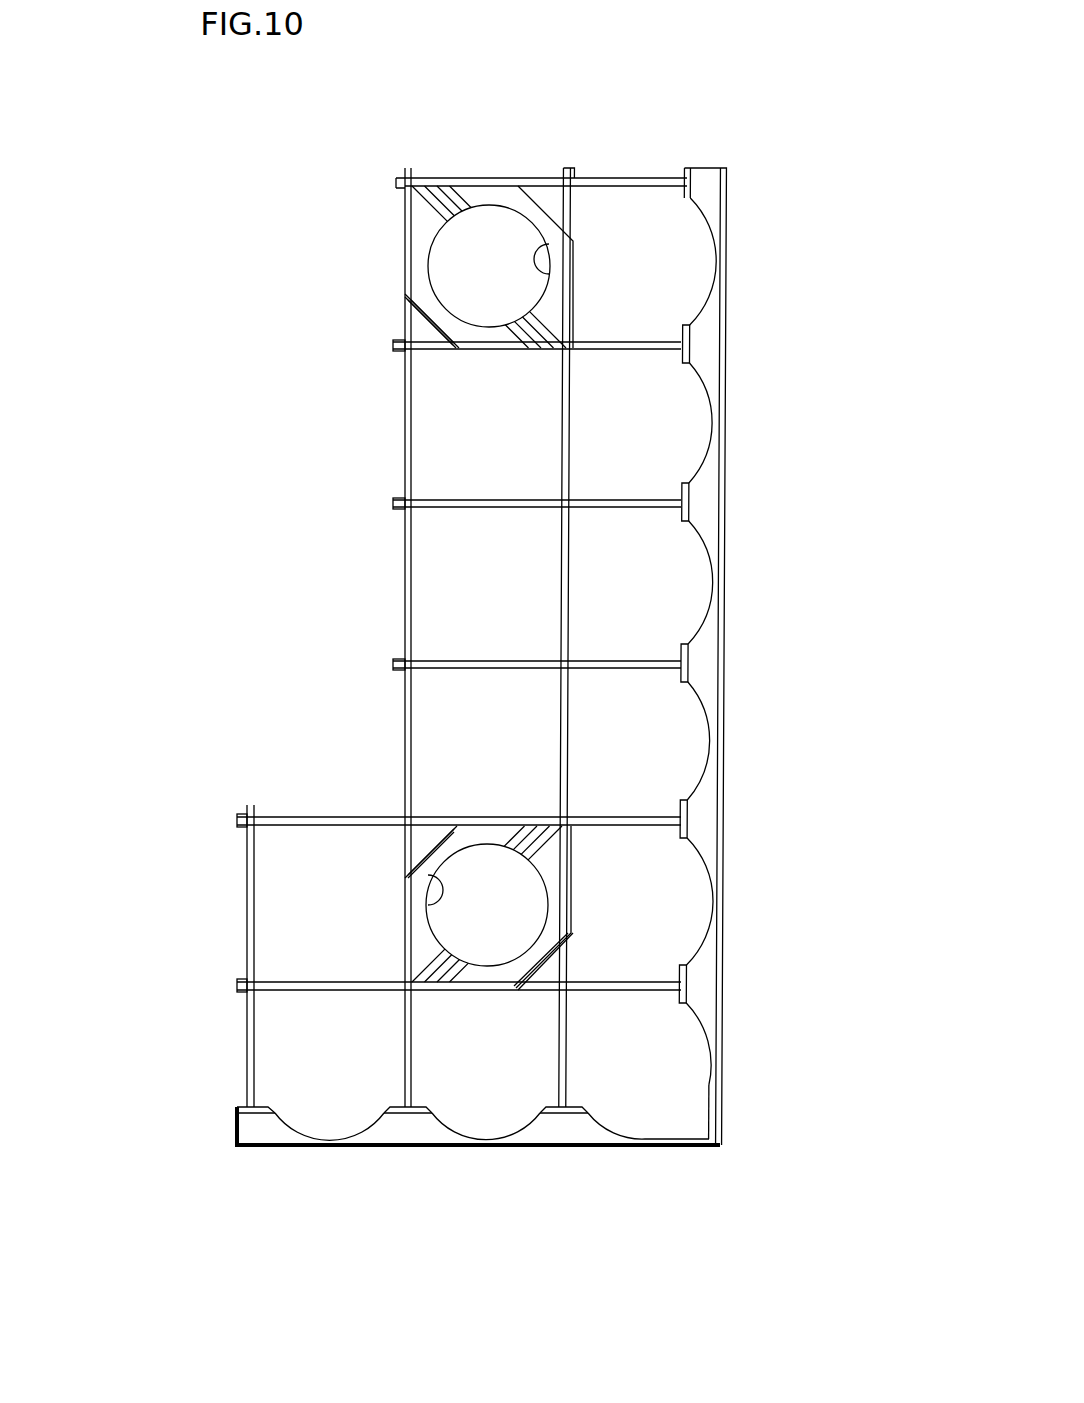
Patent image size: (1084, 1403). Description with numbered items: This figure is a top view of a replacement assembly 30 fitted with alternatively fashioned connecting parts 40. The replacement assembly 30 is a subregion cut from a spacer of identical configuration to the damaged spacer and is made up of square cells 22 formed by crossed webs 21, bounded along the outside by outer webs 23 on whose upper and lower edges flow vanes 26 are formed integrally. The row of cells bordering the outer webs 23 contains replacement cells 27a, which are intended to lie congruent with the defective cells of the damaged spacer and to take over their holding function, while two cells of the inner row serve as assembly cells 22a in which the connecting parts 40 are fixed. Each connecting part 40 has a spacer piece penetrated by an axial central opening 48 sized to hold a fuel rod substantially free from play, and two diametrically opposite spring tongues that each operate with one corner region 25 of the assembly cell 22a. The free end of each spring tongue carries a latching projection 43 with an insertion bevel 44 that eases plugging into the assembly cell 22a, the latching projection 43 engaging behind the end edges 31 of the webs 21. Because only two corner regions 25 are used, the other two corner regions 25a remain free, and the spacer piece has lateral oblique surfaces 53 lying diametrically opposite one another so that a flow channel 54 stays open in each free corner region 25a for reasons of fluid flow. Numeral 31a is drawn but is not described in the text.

The webs 21 is at (477, 657).
The cells 22 is at (470, 560).
The assembly cell 22a is at (420, 322).
The outer webs 23 is at (720, 495).
The corner region 25 is at (383, 197).
The corner regions 25a is at (431, 338).
The flow vanes 26 is at (698, 662).
The replacement cells 27a is at (640, 298).
The replacement assembly 30 is at (690, 148).
The end edges 31 is at (543, 1003).
The rib end 31a is at (550, 218).
The connecting part 40 is at (404, 263).
The latching projection 43 is at (453, 183).
The insertion bevel 44 is at (403, 217).
The central opening 48 is at (548, 272).
The lateral oblique surfaces 53 is at (560, 218).
The flow channel 54 is at (582, 178).